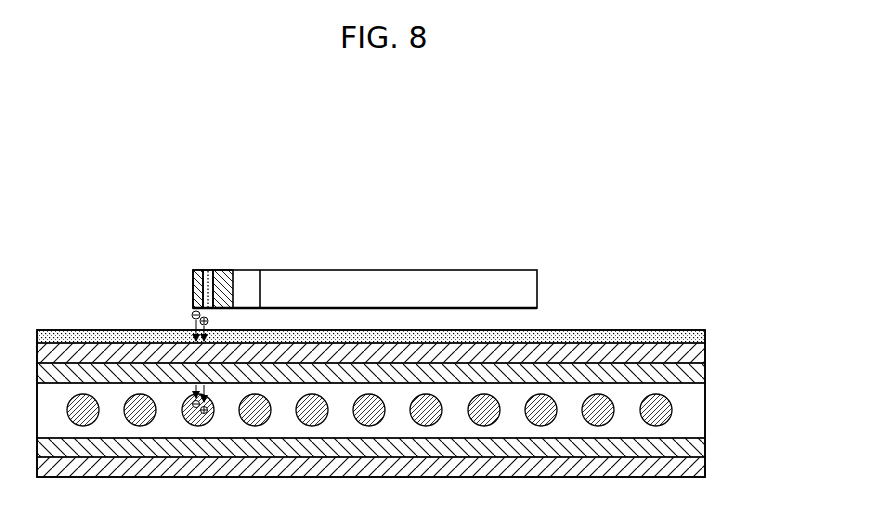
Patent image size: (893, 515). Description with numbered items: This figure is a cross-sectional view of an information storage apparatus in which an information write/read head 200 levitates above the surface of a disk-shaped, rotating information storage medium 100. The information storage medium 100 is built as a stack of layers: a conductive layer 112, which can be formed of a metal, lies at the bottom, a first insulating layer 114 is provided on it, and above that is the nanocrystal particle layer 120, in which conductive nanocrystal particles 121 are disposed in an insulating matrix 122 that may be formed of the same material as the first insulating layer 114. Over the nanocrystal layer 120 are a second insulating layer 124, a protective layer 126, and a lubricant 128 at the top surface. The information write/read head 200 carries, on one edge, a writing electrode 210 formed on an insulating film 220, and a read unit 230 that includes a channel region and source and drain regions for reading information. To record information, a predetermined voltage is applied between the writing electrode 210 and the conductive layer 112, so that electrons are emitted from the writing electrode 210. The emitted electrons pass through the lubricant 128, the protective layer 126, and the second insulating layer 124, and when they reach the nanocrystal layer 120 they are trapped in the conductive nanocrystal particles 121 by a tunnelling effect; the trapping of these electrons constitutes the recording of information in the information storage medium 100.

The information storage medium 100 is at (88, 311).
The conductive layer 112 is at (706, 465).
The first insulating layer 114 is at (706, 446).
The nanocrystal particle layer 120 is at (426, 410).
The conductive nanocrystal particles 121 is at (672, 411).
The insulating matrix 122 is at (706, 398).
The second insulating layer 124 is at (706, 372).
The protective layer 126 is at (706, 352).
The lubricant 128 is at (706, 332).
The information write/read head 200 is at (336, 251).
The writing electrode 210 is at (192, 268).
The insulating film 220 is at (208, 268).
The read unit 230 is at (243, 267).